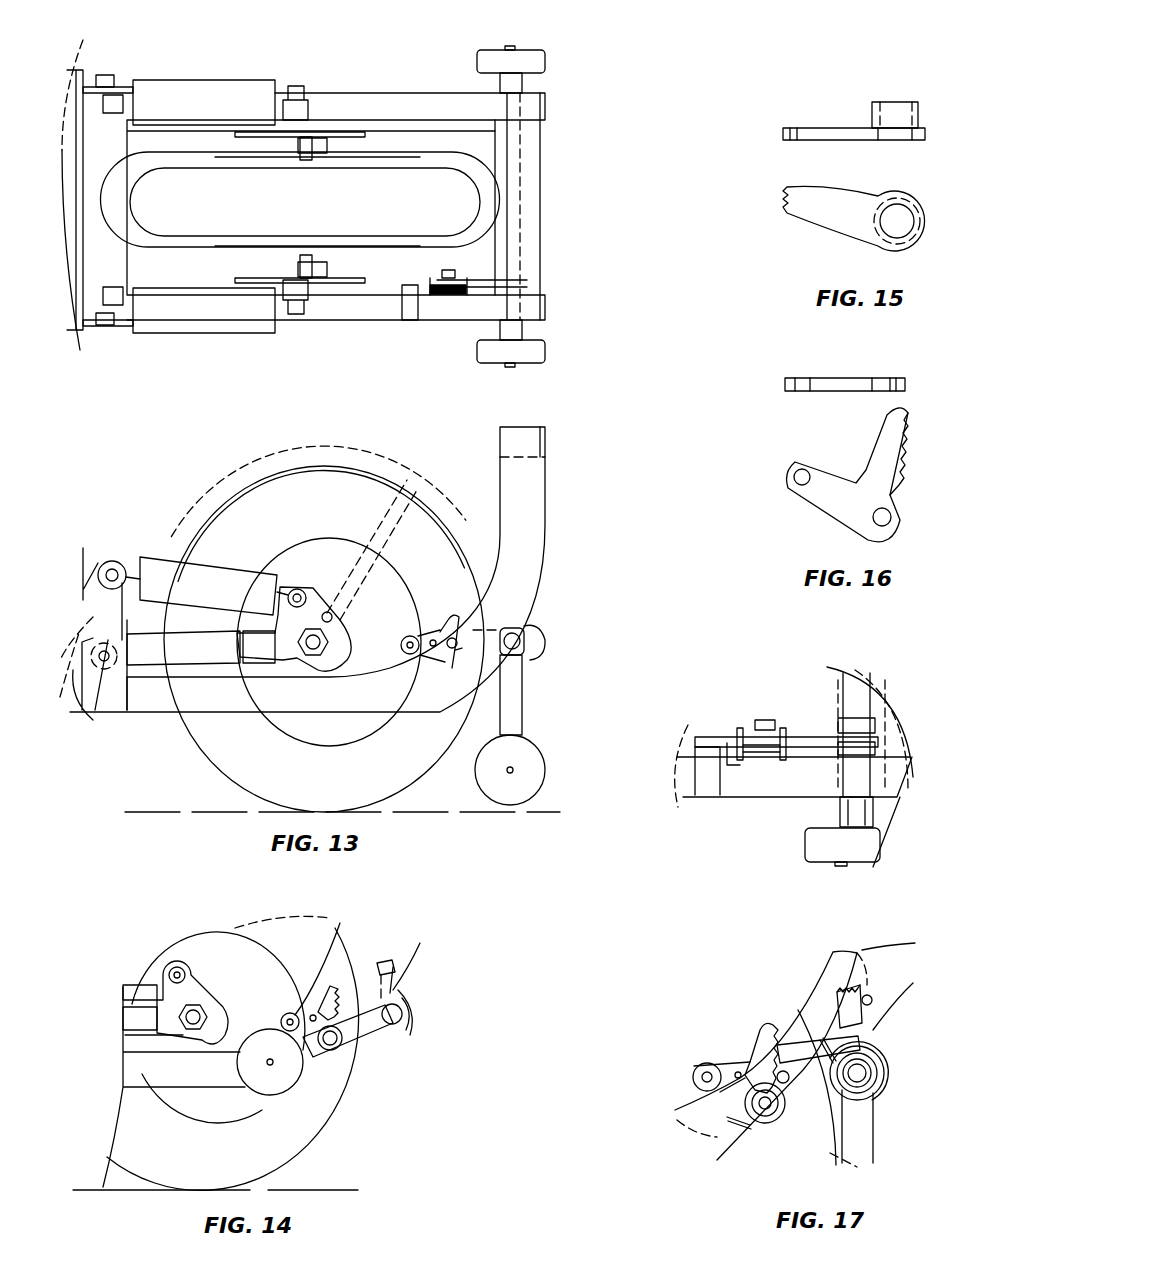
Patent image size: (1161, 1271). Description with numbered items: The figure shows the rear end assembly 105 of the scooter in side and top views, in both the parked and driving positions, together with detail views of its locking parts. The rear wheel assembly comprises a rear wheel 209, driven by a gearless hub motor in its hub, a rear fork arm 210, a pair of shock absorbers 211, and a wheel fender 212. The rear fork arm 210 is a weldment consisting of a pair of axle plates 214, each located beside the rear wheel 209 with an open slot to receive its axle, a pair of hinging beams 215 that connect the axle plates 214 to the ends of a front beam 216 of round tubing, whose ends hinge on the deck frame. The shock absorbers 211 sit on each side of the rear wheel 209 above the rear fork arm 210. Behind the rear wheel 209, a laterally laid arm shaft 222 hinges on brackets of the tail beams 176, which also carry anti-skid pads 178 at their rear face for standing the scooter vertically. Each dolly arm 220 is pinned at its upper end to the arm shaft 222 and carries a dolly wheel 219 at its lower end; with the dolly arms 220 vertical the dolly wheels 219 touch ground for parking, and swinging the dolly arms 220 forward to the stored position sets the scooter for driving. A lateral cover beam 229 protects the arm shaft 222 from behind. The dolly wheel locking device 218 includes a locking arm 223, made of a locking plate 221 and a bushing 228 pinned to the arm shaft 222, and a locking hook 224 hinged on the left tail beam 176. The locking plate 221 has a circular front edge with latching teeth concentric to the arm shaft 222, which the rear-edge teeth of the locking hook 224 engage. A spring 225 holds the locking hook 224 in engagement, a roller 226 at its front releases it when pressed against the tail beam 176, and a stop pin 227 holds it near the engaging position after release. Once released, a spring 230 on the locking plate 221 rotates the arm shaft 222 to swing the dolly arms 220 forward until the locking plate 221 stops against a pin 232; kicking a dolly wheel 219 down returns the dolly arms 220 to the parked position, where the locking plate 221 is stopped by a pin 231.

In FIG. 13, the rear end assembly 105 is at (283, 55).
In FIG. 13, the tail beams 176 is at (432, 93).
In FIG. 17, the tail beams 176 is at (812, 998).
In FIG. 13, the anti-skid pads 178 is at (548, 440).
In FIG. 13, the rear wheel 209 is at (395, 800).
In FIG. 13, the rear fork arm 210 is at (180, 667).
In FIG. 13, the shock absorbers 211 is at (205, 80).
In FIG. 13, the wheel fender 212 is at (360, 450).
In FIG. 13, the axle plates 214 is at (348, 283).
In FIG. 13, the hinging beams 215 is at (157, 712).
In FIG. 13, the front beam 216 is at (102, 672).
In FIG. 13, the dolly-wheel locking device 218 is at (756, 700).
In FIG. 17, the dolly-wheel locking device 218 is at (742, 1022).
In FIG. 13, the dolly wheels 219 is at (528, 50).
In FIG. 14, the dolly wheels 219 is at (300, 1082).
In FIG. 13, the dolly arms 220 is at (524, 82).
In FIG. 14, the dolly arms 220 is at (345, 1047).
In FIG. 17, the dolly arms 220 is at (877, 1118).
In FIG. 13, the locking plate 221 is at (812, 738).
In FIG. 15, the locking plate 221 is at (845, 128).
In FIG. 14, the locking plate 221 is at (405, 985).
In FIG. 17, the locking plate 221 is at (875, 1128).
In FIG. 13, the arm shaft 222 is at (521, 243).
In FIG. 13, the locking arm 223 is at (816, 708).
In FIG. 15, the locking arm 223 is at (812, 230).
In FIG. 13, the locking hook 224 is at (422, 298).
In FIG. 16, the locking hook 224 is at (843, 378).
In FIG. 14, the locking hook 224 is at (335, 1000).
In FIG. 17, the locking hook 224 is at (778, 1035).
In FIG. 17, the spring 225 is at (738, 1125).
In FIG. 13, the roller 226 is at (402, 302).
In FIG. 17, the stop pin 227 is at (735, 1068).
In FIG. 15, the bushing 228 is at (895, 102).
In FIG. 17, the lateral cover beam 229 is at (882, 1055).
In FIG. 17, the spring 230 is at (850, 1028).
In FIG. 17, the pin 231 is at (838, 1155).
In FIG. 14, the pin 232 is at (405, 962).
In FIG. 17, the pin 232 is at (868, 988).